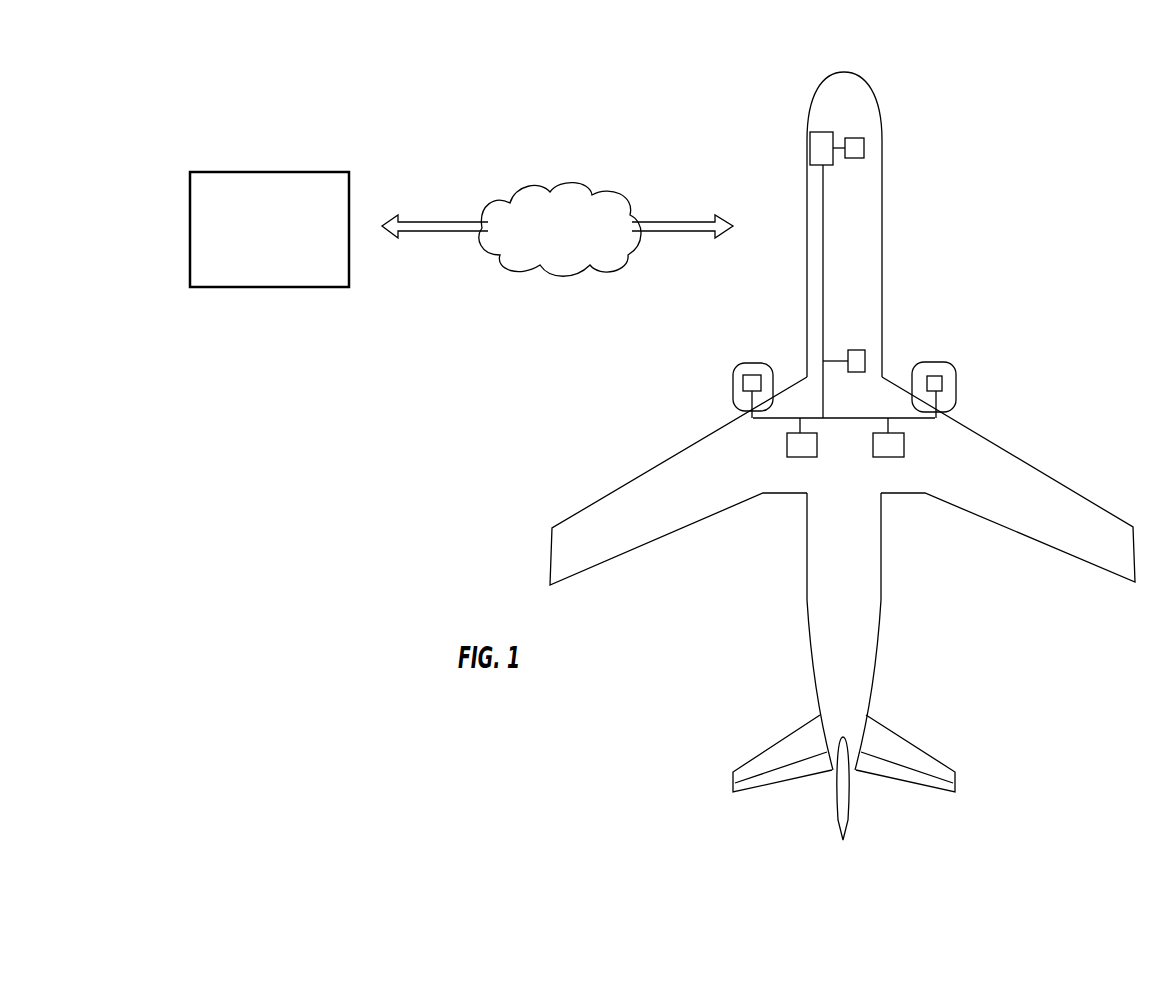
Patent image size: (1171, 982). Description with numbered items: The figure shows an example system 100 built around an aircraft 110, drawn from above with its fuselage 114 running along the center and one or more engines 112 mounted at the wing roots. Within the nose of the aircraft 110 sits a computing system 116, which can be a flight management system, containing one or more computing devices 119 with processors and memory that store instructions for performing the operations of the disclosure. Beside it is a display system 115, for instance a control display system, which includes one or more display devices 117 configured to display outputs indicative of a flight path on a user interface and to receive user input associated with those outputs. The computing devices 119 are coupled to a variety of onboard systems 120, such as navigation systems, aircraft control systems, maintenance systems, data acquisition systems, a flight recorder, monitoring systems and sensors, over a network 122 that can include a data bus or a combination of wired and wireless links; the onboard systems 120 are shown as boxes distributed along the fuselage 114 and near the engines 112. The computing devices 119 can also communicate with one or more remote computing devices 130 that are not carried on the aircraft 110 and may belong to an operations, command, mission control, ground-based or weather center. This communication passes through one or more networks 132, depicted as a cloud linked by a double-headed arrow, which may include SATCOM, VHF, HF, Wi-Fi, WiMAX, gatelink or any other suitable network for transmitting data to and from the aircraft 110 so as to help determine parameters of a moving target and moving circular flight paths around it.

The system 100 is at (278, 122).
The aircraft 110 is at (842, 451).
The engine 112 is at (750, 365).
The fuselage 114 is at (875, 237).
The display system 115 is at (865, 148).
The computing system 116 is at (829, 127).
The display device 117 is at (858, 135).
The computing device 119 is at (810, 150).
The onboard systems 120 is at (866, 360).
The network 122 is at (823, 287).
The remote computing device 130 is at (286, 244).
The network 132 is at (572, 244).